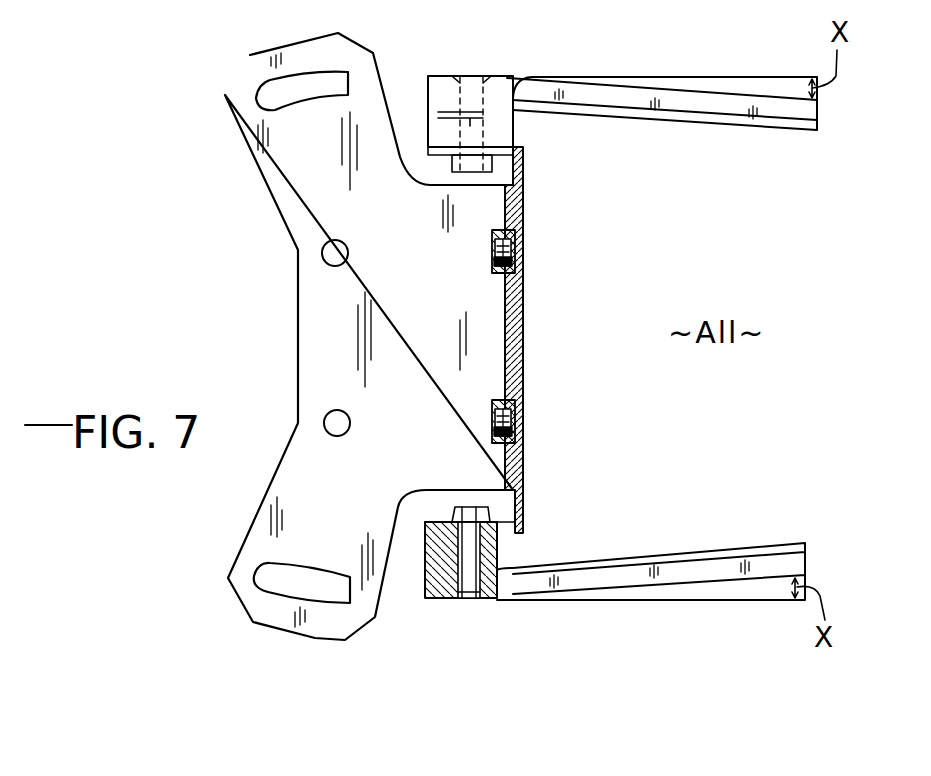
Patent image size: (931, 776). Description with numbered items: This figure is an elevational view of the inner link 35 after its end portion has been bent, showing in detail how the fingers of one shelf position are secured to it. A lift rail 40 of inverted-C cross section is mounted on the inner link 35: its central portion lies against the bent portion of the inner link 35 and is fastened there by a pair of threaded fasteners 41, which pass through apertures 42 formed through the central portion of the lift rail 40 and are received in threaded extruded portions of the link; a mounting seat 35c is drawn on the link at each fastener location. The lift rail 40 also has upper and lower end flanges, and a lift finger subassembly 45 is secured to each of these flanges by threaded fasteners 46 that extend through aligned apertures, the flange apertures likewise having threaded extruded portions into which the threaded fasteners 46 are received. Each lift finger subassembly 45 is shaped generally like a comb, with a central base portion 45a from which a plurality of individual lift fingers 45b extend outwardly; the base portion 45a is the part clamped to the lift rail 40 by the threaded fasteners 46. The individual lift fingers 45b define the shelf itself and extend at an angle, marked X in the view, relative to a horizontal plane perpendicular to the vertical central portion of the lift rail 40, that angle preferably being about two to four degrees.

The inner link 35 is at (312, 313).
The mounting bracket 35c is at (492, 258).
The lift rail 40 is at (525, 345).
The threaded fasteners 41 is at (525, 250).
The apertures 42 is at (517, 265).
The lift finger subassembly 45 is at (556, 354).
The central base portion 45a is at (442, 95).
The individual lift fingers 45b is at (628, 97).
The threaded fasteners 46 is at (472, 103).